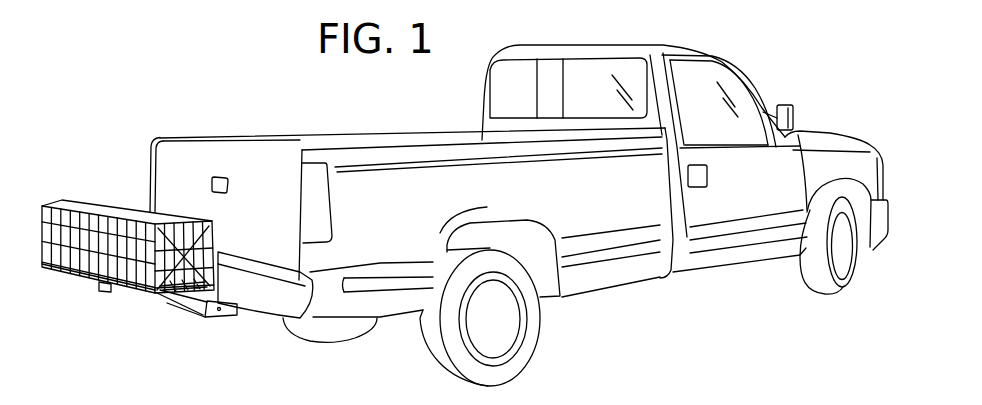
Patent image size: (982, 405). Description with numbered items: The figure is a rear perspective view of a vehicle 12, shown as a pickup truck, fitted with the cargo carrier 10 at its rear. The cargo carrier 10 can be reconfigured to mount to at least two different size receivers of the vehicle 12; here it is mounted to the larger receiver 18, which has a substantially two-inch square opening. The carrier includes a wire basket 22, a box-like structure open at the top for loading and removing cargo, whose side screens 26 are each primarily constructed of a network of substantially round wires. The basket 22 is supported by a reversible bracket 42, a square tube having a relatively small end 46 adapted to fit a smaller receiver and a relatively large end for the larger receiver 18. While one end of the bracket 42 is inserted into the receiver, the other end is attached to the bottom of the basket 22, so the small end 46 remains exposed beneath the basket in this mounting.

The cargo carrier 10 is at (76, 130).
The vehicle 12 is at (318, 133).
The larger receiver 18 is at (232, 318).
The wire basket 22 is at (42, 268).
The side screen 26 is at (93, 268).
The reversible bracket 42 is at (172, 297).
The small end 46 is at (115, 290).